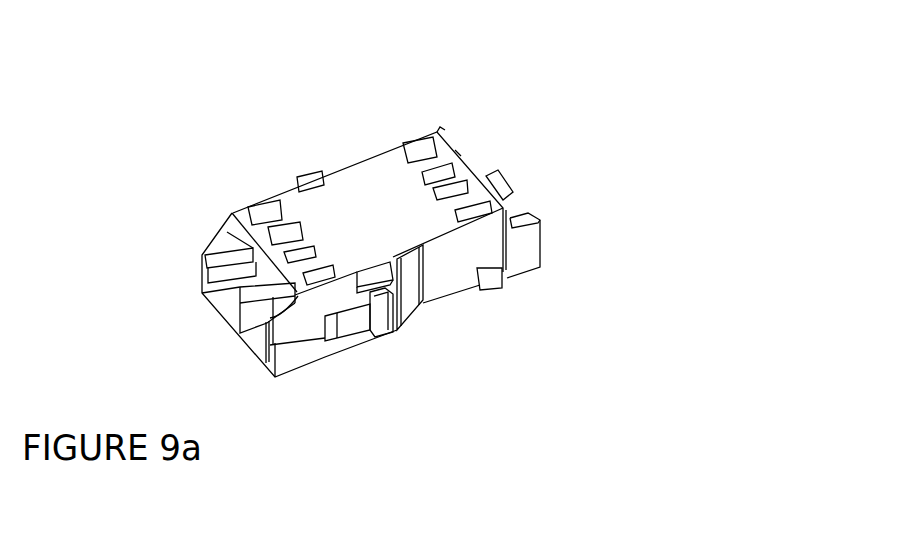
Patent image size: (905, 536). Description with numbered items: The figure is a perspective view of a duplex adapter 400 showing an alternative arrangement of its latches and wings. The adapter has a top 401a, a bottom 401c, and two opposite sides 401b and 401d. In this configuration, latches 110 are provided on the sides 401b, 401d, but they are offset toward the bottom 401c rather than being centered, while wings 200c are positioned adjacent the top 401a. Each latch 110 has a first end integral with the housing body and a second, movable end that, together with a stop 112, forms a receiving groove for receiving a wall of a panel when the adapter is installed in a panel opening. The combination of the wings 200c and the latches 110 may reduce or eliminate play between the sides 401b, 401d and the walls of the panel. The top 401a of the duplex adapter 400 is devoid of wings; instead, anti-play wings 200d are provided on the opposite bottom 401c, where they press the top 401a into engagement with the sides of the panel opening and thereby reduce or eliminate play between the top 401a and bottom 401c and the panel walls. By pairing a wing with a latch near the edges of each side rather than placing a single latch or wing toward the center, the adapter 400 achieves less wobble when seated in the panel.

The duplex adapter 400 is at (255, 73).
The top 401a is at (400, 187).
The side 401b is at (492, 255).
The bottom 401c is at (228, 321).
The side 401d is at (220, 240).
The wings 200c is at (315, 182).
The anti-play wings 200d is at (380, 337).
The latch 110 is at (356, 318).
The stop 112 is at (408, 306).